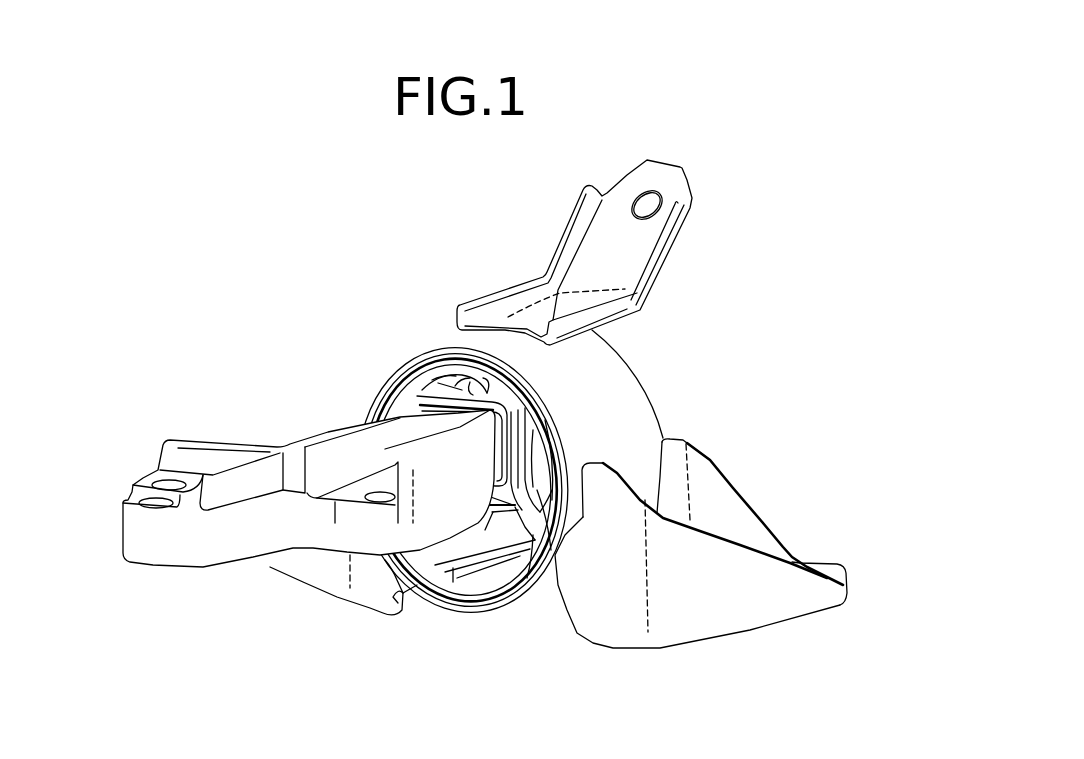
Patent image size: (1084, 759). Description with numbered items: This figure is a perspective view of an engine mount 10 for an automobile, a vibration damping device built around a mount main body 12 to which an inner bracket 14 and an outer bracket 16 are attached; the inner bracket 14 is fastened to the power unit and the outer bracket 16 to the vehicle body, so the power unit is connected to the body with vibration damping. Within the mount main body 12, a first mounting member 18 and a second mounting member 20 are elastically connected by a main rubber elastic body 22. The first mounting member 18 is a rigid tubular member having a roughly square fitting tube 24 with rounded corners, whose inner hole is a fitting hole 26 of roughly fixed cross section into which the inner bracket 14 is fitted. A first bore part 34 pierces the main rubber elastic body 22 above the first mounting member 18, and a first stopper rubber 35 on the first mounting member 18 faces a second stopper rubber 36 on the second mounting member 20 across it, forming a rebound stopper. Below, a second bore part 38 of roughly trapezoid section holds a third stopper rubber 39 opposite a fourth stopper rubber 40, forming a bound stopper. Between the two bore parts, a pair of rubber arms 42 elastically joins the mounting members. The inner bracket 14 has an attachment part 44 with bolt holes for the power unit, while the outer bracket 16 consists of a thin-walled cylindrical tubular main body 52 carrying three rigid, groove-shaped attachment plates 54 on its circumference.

The engine mount 10 is at (280, 342).
The mount main body 12 is at (431, 603).
The inner bracket 14 is at (157, 441).
The outer bracket 16 is at (737, 644).
The first mounting member 18 is at (417, 392).
The second mounting member 20 is at (378, 398).
The main rubber elastic body 22 is at (553, 474).
The fitting tube 24 is at (510, 432).
The fitting hole 26 is at (490, 452).
The first bore part 34 is at (490, 392).
The first stopper rubber 35 is at (437, 391).
The second stopper rubber 36 is at (462, 377).
The second bore part 38 is at (508, 512).
The third stopper rubber 39 is at (537, 490).
The fourth stopper rubber 40 is at (475, 570).
The rubber arms 42 is at (540, 512).
The attachment part 44 is at (164, 547).
The tubular main body 52 is at (603, 358).
The attachment plates 54 is at (628, 186).